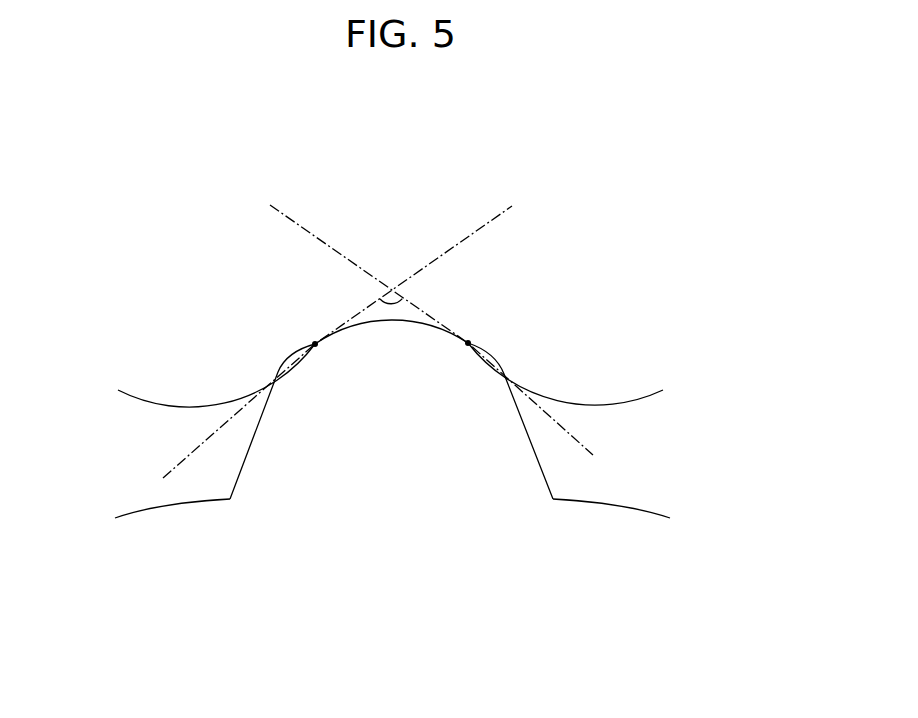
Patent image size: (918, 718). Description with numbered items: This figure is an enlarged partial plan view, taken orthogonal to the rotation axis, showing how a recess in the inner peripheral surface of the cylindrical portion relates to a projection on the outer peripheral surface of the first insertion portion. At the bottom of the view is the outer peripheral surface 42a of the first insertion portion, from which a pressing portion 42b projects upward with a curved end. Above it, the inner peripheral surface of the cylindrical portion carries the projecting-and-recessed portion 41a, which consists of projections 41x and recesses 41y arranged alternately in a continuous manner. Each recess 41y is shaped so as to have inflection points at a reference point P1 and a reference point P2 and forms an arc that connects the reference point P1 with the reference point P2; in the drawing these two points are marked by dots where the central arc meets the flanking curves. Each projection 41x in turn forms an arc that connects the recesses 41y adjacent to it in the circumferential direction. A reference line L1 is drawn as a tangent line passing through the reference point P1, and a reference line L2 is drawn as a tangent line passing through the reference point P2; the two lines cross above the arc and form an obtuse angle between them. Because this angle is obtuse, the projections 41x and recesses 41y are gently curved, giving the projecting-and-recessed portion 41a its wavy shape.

The projection 41x is at (191, 407).
The recess 41y is at (395, 323).
The projecting-and-recessed portion 41a is at (613, 404).
The outer peripheral surface 42a is at (613, 505).
The pressing portion 42b is at (545, 475).
The reference line L1 is at (477, 233).
The reference line L2 is at (314, 232).
The reference point P1 is at (315, 343).
The reference point P2 is at (468, 343).